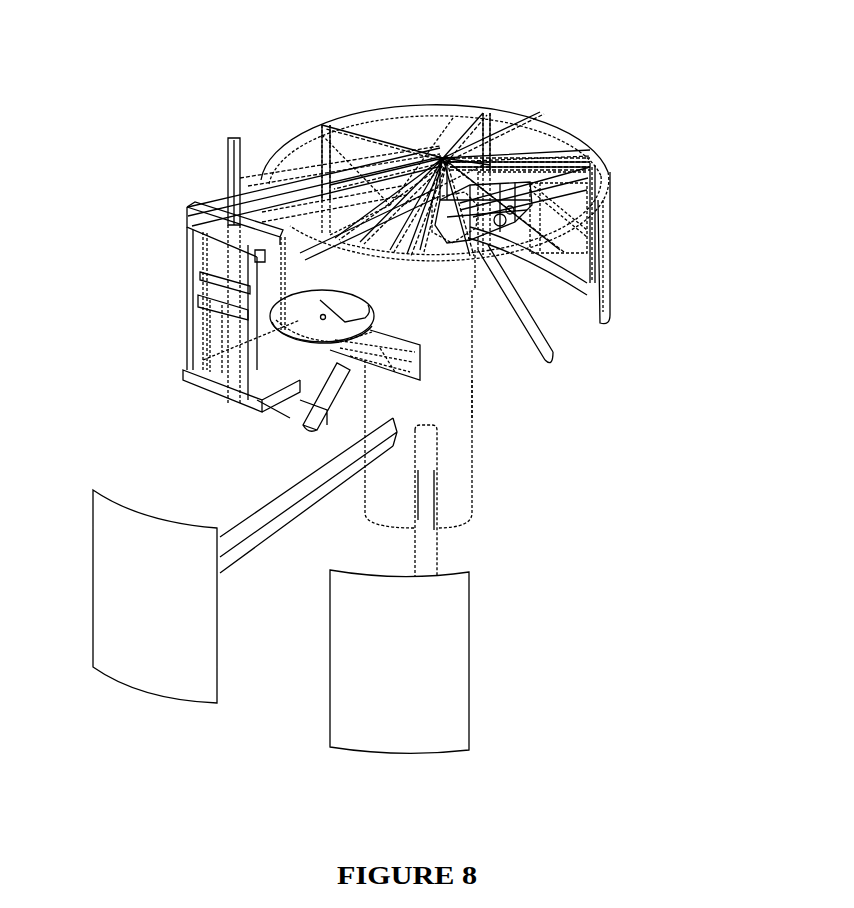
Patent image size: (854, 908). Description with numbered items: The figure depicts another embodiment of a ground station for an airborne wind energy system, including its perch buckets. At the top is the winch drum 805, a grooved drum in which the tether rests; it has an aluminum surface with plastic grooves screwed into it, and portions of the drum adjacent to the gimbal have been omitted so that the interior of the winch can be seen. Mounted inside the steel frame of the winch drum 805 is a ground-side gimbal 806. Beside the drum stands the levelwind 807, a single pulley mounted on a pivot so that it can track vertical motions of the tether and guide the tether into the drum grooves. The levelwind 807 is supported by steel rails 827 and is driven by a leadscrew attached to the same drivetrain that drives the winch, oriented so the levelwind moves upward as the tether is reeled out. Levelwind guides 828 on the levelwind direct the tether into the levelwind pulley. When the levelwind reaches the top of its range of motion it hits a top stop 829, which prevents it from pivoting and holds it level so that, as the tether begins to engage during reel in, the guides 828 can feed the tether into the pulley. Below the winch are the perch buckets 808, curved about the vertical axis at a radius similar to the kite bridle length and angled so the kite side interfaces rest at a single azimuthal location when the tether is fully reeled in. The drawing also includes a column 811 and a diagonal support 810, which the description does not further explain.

The winch drum 805 is at (613, 260).
The ground-side gimbal 806 is at (443, 208).
The levelwind 807 is at (278, 343).
The perch buckets 808 is at (160, 528).
The diagonal support beam 810 is at (113, 587).
The central column 811 is at (460, 412).
The steel rails 827 is at (278, 265).
The levelwind guides 828 is at (410, 342).
The top stop 829 is at (277, 240).